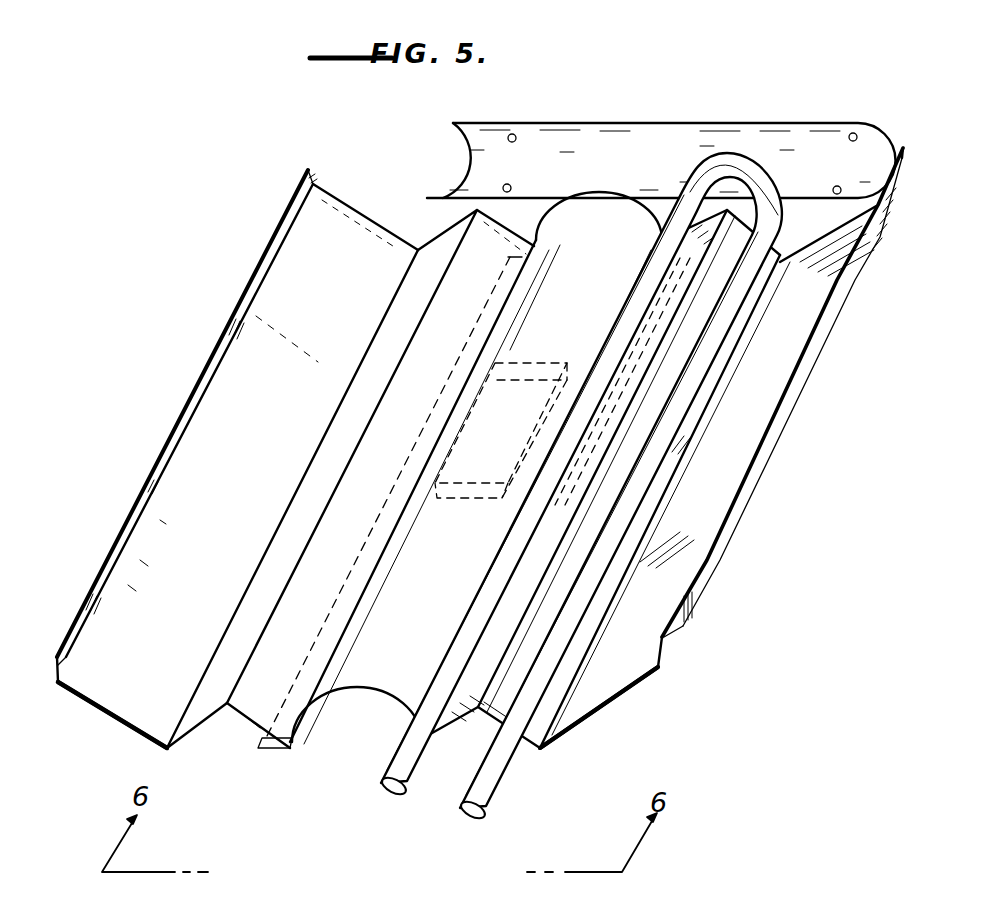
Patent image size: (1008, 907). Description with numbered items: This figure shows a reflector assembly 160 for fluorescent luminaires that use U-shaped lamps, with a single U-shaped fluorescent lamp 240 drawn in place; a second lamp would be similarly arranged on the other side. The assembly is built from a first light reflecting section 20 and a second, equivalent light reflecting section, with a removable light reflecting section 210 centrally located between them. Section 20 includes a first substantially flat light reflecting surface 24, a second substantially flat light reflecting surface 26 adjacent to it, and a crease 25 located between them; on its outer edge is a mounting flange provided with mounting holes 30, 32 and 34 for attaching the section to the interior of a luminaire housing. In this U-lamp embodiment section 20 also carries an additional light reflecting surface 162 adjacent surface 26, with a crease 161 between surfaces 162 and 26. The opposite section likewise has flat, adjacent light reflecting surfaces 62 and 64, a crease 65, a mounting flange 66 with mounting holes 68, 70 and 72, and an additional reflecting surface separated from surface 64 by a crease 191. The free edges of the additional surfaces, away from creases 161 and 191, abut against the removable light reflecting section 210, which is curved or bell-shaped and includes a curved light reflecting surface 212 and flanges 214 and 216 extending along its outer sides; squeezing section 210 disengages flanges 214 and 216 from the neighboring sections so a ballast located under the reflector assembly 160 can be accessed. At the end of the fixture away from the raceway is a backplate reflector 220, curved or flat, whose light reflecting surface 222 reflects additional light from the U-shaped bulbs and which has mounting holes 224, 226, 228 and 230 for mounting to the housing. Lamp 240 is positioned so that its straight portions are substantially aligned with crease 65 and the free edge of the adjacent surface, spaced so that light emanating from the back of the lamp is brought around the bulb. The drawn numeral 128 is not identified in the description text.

The light reflecting section 20 is at (101, 708).
The first substantially flat light reflecting surface 24 is at (248, 484).
The crease 25 is at (246, 588).
The second substantially flat light reflecting surface 26 is at (296, 500).
The mounting hole 30 is at (66, 654).
The mounting hole 32 is at (190, 423).
The mounting hole 34 is at (299, 184).
The light reflecting surface 62 is at (726, 500).
The light reflecting surface 64 is at (642, 462).
The crease 65 is at (636, 536).
The mounting flange 66 is at (757, 472).
The mounting hole 68 is at (672, 637).
The mounting hole 70 is at (781, 408).
The mounting hole 72 is at (884, 209).
The flange wall 128 is at (157, 488).
The reflector assembly 160 is at (200, 338).
The crease 161 is at (290, 605).
The light reflecting surface 162 is at (374, 546).
The crease 191 is at (500, 663).
The removable light reflecting section 210 is at (372, 692).
The curved light reflecting surface 212 is at (455, 584).
The flange 214 is at (270, 749).
The flange 216 is at (425, 742).
The backplate reflector 220 is at (700, 113).
The light reflecting surface 222 is at (658, 176).
The mounting hole 224 is at (516, 135).
The mounting hole 226 is at (510, 185).
The mounting hole 228 is at (876, 118).
The mounting hole 230 is at (839, 187).
The U-shaped fluorescent lamp 240 is at (736, 152).